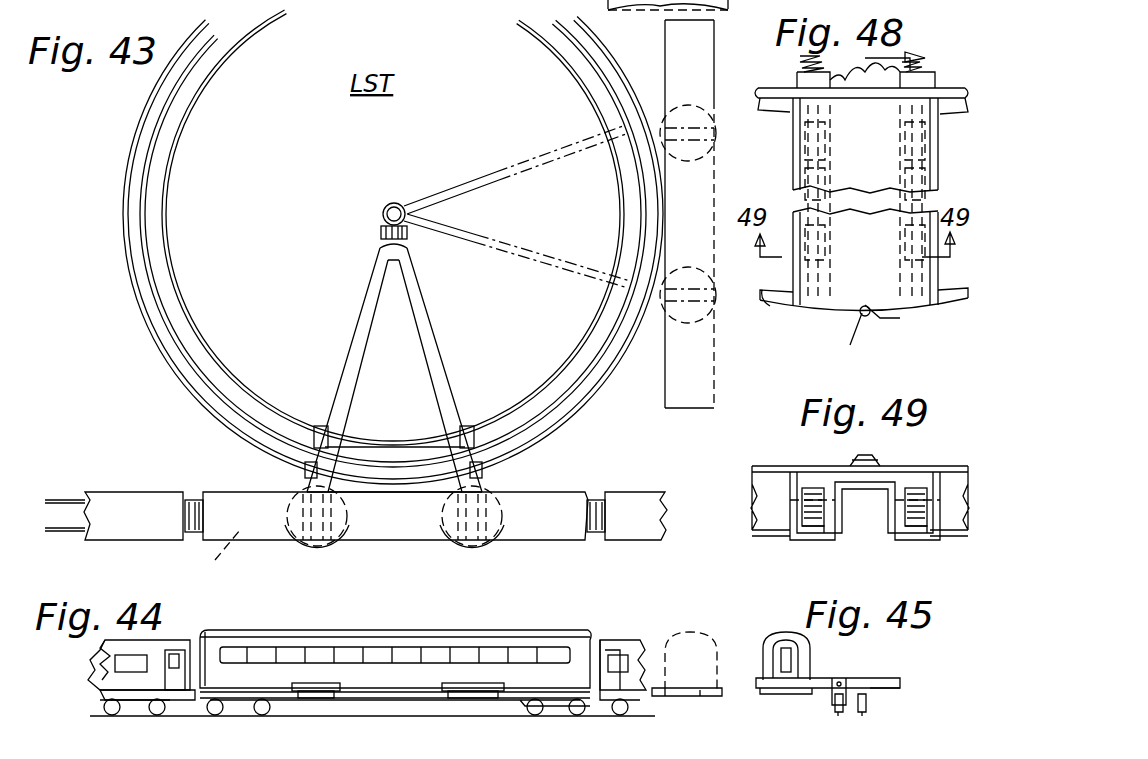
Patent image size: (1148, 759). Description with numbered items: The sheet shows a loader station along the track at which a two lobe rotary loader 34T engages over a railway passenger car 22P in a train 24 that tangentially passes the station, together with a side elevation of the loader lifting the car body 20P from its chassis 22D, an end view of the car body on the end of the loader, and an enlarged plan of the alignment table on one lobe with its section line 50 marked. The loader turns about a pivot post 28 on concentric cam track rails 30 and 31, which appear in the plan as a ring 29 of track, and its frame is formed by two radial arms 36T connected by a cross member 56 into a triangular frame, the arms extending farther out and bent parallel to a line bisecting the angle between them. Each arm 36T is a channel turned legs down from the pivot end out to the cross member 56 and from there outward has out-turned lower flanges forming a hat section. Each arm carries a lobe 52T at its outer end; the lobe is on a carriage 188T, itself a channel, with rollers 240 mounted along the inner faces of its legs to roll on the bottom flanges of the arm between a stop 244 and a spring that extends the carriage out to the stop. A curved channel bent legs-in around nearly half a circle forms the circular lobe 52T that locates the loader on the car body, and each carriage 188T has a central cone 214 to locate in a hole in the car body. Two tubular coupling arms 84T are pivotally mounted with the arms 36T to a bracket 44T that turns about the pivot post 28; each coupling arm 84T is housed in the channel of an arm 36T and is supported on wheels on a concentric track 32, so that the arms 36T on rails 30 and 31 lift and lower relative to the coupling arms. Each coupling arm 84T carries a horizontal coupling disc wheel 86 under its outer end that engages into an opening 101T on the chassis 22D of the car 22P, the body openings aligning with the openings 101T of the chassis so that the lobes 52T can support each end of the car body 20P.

In FIG. 43, the car body 20P is at (240, 476).
In FIG. 44, the car body 20P is at (415, 632).
In FIG. 45, the car body 20P is at (790, 618).
In FIG. 43, the railway passenger car 22P is at (200, 551).
In FIG. 43, the train 24 is at (620, 494).
In FIG. 43, the pivot post 28 is at (390, 210).
In FIG. 43, the ring track 29 is at (369, 242).
In FIG. 43, the cam track rail 30 is at (150, 326).
In FIG. 43, the cam track rail 31 is at (160, 340).
In FIG. 43, the concentric track 32 is at (168, 218).
In FIG. 43, the two lobe rotary loader 34T is at (555, 140).
In FIG. 45, the two lobe rotary loader 34T is at (855, 680).
In FIG. 43, the radial arm 36T is at (348, 352).
In FIG. 49, the radial arm 36T is at (838, 545).
In FIG. 45, the radial arm 36T is at (900, 683).
In FIG. 43, the bracket 44T is at (385, 242).
In FIG. 43, the cross member 56 is at (410, 428).
In FIG. 43, the horizontal coupling disc wheel 86 is at (300, 548).
In FIG. 43, the lobe 52T is at (335, 545).
In FIG. 48, the lobe 52T is at (770, 310).
In FIG. 48, the spring latch 50 is at (900, 332).
In FIG. 48, the carriage 188T is at (793, 150).
In FIG. 49, the carriage 188T is at (810, 468).
In FIG. 45, the carriage 188T is at (916, 723).
In FIG. 48, the stop 244 is at (863, 343).
In FIG. 49, the central cone 214 is at (878, 456).
In FIG. 49, the roller 240 is at (810, 535).
In FIG. 44, the opening 101T is at (298, 700).
In FIG. 44, the chassis 22D is at (375, 700).
In FIG. 45, the tubular coupling arm 84T is at (880, 694).